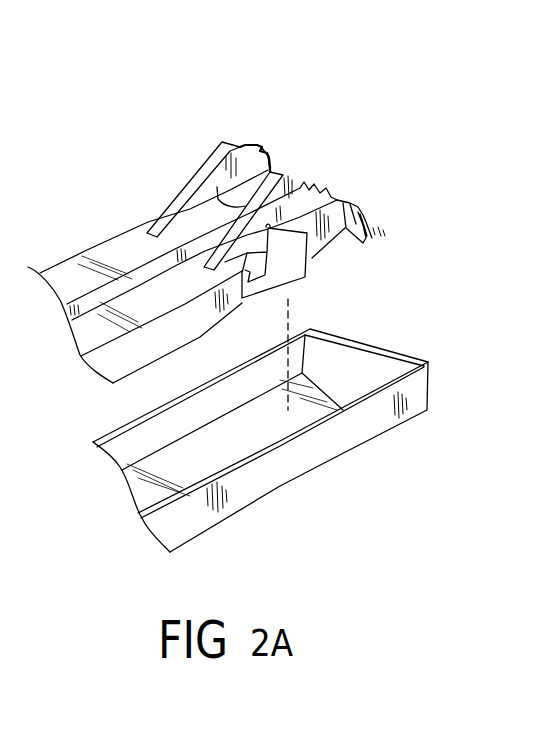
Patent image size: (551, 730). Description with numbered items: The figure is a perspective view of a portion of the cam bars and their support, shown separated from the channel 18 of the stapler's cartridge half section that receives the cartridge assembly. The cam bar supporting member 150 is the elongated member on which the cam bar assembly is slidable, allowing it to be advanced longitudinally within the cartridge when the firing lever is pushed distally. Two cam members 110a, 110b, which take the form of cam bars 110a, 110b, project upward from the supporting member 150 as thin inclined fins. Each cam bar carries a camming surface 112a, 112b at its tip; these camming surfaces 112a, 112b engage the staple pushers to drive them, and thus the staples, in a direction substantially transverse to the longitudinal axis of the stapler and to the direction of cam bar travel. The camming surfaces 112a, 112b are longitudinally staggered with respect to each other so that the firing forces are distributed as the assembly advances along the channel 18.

The cam bar supporting member 150 is at (142, 357).
The cam member 110a is at (273, 207).
The cam member 110b is at (197, 181).
The camming surface 112a is at (270, 160).
The camming surface 112b is at (209, 170).
The channel 18 is at (357, 492).